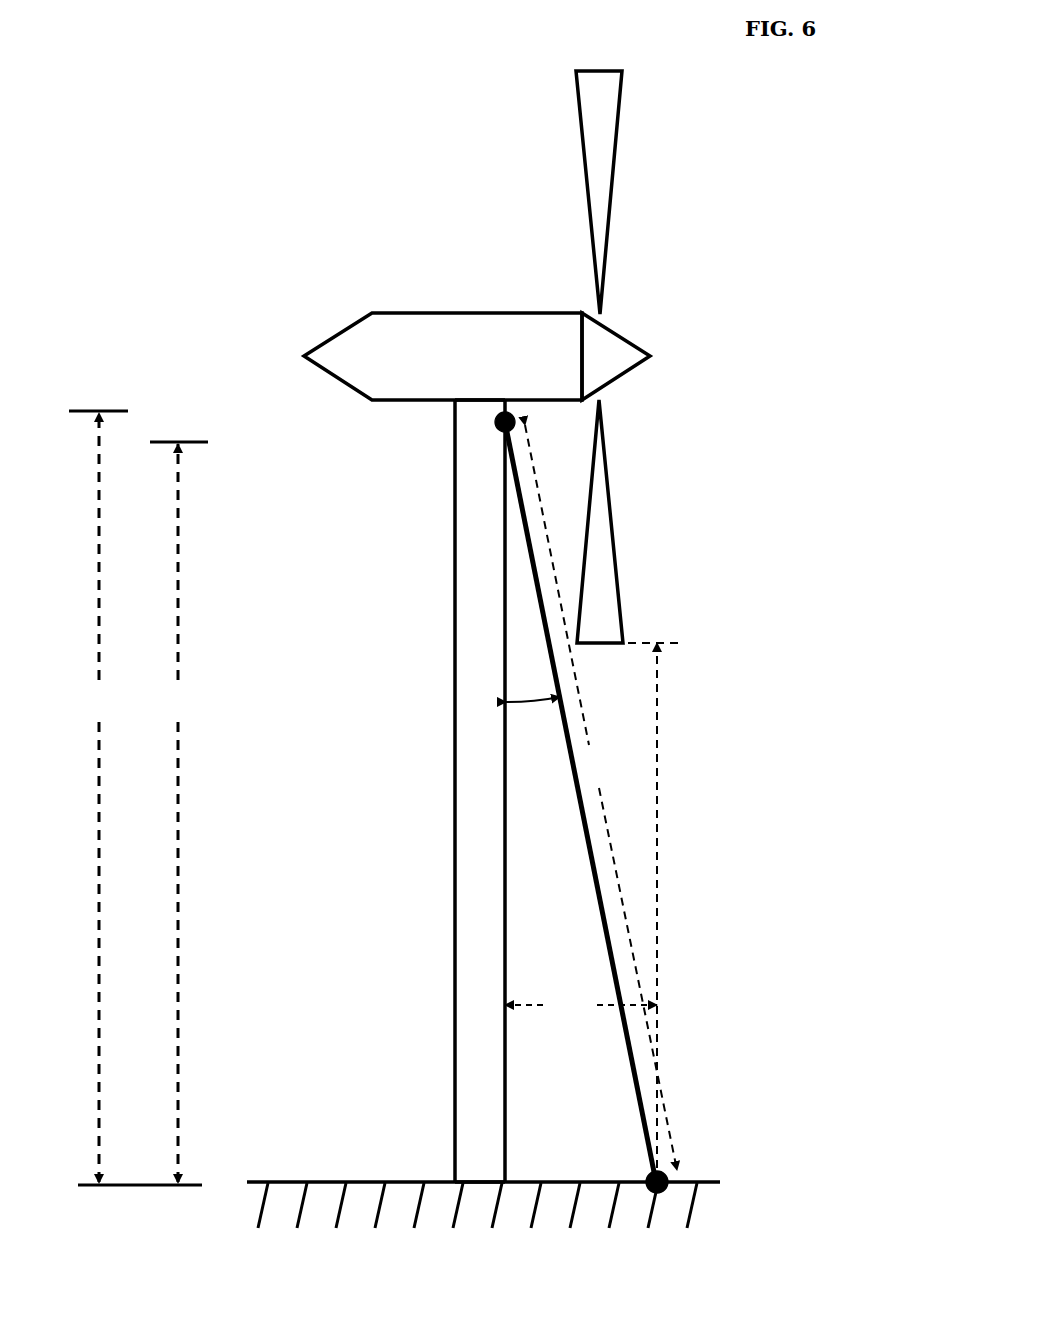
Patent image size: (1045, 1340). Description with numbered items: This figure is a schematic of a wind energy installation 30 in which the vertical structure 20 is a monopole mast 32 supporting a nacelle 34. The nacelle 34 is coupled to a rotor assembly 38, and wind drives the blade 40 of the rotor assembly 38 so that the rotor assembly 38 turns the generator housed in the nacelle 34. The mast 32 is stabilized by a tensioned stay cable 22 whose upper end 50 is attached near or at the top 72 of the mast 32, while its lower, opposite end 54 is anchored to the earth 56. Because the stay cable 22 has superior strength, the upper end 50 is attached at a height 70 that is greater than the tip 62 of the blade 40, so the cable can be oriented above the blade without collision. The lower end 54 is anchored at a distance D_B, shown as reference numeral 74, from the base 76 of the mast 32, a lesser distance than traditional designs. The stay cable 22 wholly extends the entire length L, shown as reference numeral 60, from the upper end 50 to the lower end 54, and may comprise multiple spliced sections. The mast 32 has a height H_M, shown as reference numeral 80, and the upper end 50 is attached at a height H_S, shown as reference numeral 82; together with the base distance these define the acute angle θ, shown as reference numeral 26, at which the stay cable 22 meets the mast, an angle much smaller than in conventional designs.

The wind energy installation 30 is at (247, 210).
The blade 40 is at (622, 103).
The nacelle 34 is at (330, 375).
The rotor assembly 38 is at (630, 340).
The vertical structure 20 is at (457, 791).
The monopole mast 32 is at (455, 960).
The top of the mast 72 is at (453, 402).
The base of the mast 76 is at (505, 1168).
The upper end 50 is at (497, 423).
The stay cable 22 is at (613, 933).
The acute angle θ 26 is at (540, 707).
The length L 60 is at (608, 762).
The tip of the blade 62 is at (595, 643).
The height 70 is at (658, 802).
The distance D_B 74 is at (580, 993).
The lower, opposite end 54 is at (652, 1175).
The earth 56 is at (715, 1180).
The height H_M 80 is at (88, 677).
The height H_S 82 is at (166, 680).